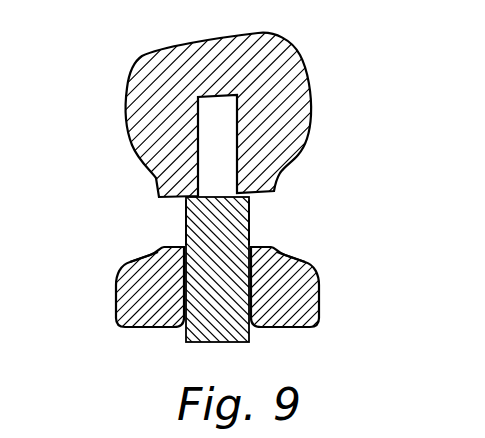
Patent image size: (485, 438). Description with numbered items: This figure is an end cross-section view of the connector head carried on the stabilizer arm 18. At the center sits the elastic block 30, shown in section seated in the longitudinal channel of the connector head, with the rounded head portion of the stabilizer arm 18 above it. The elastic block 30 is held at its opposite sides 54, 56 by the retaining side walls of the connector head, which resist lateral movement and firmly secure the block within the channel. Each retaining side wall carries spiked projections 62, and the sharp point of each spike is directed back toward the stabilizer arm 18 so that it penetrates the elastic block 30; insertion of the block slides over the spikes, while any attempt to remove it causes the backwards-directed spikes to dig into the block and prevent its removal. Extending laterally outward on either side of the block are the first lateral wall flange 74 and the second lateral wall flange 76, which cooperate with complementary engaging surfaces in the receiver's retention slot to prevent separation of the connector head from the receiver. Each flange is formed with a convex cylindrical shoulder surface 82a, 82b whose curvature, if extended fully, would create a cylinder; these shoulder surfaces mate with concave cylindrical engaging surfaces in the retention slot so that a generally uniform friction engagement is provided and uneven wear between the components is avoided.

The stabilizer arm 18 is at (262, 43).
The elastic block 30 is at (193, 346).
The side of elastic block 54 is at (250, 217).
The side of elastic block 56 is at (186, 217).
The spiked projections 62 is at (184, 248).
The first lateral wall flange 74 is at (115, 297).
The second lateral wall flange 76 is at (322, 299).
The cylindrical shoulder surface 82a is at (112, 277).
The cylindrical shoulder surface 82b is at (314, 270).